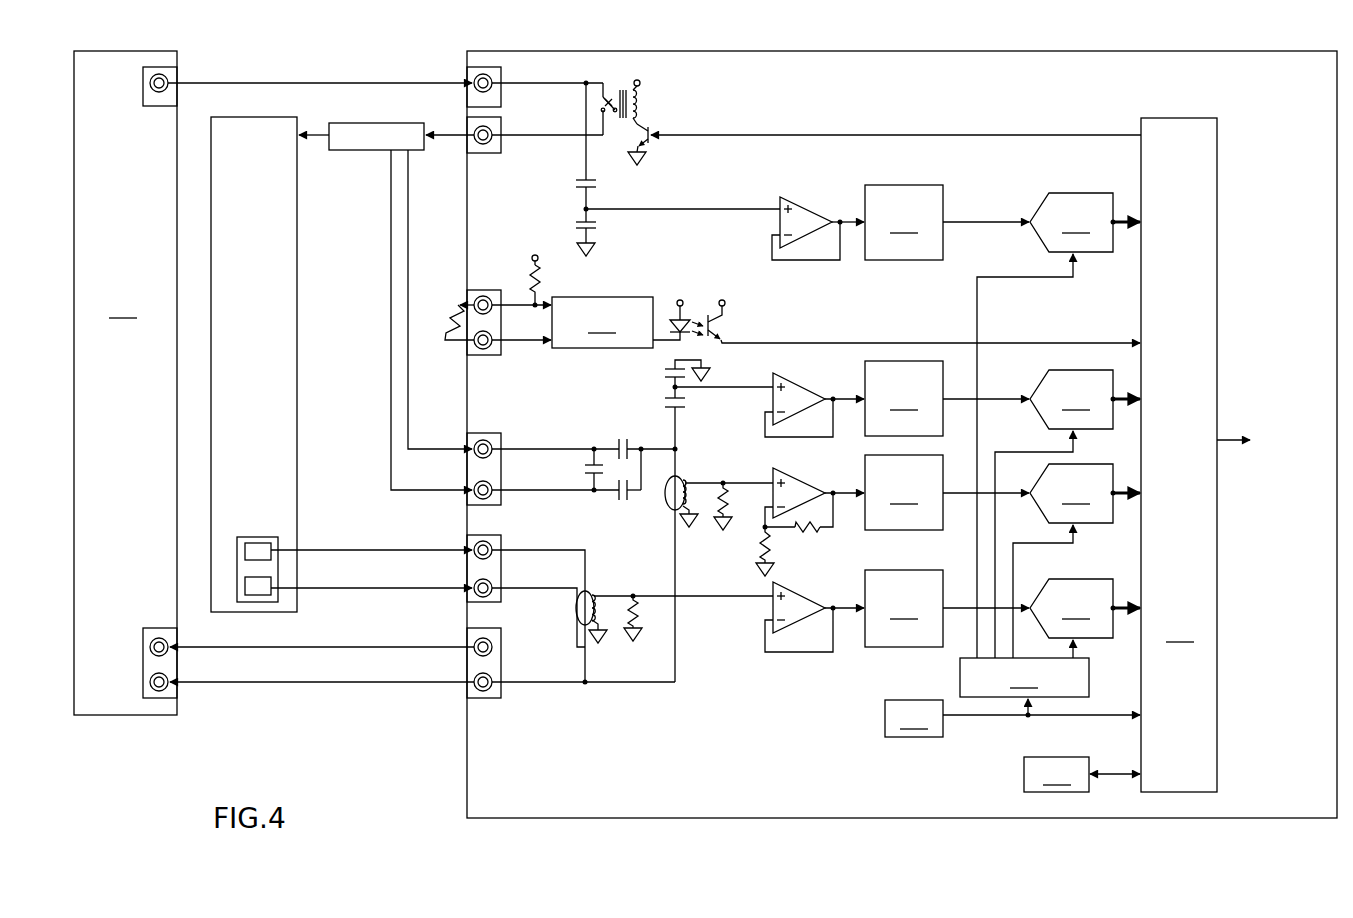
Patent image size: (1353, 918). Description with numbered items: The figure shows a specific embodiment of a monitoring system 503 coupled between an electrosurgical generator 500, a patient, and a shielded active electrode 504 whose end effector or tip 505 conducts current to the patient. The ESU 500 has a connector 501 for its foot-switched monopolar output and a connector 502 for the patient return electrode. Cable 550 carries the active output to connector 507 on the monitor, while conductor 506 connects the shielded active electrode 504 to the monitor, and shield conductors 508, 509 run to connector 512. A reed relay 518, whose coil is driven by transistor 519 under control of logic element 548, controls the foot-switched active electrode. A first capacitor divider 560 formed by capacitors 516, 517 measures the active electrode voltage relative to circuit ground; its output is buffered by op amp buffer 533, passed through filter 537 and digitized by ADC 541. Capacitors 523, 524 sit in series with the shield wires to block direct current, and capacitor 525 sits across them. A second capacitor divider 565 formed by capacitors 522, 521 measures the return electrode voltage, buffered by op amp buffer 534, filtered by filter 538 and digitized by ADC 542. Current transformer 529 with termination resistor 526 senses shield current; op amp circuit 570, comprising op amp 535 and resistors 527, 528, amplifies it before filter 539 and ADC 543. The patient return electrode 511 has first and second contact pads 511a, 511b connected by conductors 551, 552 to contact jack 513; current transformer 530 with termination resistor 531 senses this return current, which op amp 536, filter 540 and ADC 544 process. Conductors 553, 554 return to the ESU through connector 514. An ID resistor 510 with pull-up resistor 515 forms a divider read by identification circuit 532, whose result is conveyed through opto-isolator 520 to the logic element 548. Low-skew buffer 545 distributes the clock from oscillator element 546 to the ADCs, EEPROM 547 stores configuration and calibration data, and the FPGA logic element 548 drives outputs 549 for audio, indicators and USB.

The electrosurgical generator 500 is at (125, 383).
The connector 501 is at (141, 86).
The connector 502 is at (143, 635).
The monitoring system 503 is at (790, 49).
The shielded active electrode 504 is at (350, 122).
The active electrode end effector or tip 505 is at (322, 140).
The conductor 506 is at (437, 133).
The connector 507 is at (483, 66).
The shield conductor 508 is at (409, 233).
The shield conductor 509 is at (391, 238).
The identification resistor 510 is at (455, 305).
The patient return electrode 511 is at (245, 537).
The first patient contact pad 511a is at (265, 549).
The second patient contact pad 511b is at (265, 590).
The connector 512 is at (470, 506).
The contact jack 513 is at (505, 605).
The connector 514 is at (488, 700).
The pull-up resistor 515 is at (541, 273).
The first capacitor 516 is at (597, 182).
The second capacitor 517 is at (597, 225).
The reed relay 518 is at (642, 97).
The transistor 519 is at (650, 143).
The opto-isolator 520 is at (727, 327).
The capacitor 521 is at (662, 371).
The capacitor 522 is at (662, 400).
The capacitor 523 is at (617, 440).
The capacitor 524 is at (622, 503).
The capacitor 525 is at (582, 473).
The termination resistor 526 is at (729, 500).
The resistor 527 is at (772, 553).
The resistor 528 is at (806, 535).
The current transformer 529 is at (688, 480).
The current transformer 530 is at (590, 592).
The termination resistor 531 is at (640, 605).
The identification circuit 532 is at (572, 322).
The op amp buffer 533 is at (795, 201).
The op amp buffer 534 is at (788, 378).
The op amp 535 is at (788, 473).
The op amp 536 is at (810, 605).
The filter 537 is at (947, 222).
The filter 538 is at (947, 398).
The filter 539 is at (947, 492).
The filter 540 is at (947, 608).
The analog digital converter 541 is at (1058, 425).
The analog digital converter 542 is at (1067, 514).
The analog digital converter 543 is at (1076, 561).
The analog digital converter 544 is at (1085, 618).
The low-skew buffer 545 is at (1024, 677).
The oscillator element 546 is at (1012, 718).
The EEPROM 547 is at (1082, 774).
The logic element 548 is at (1179, 455).
The outputs 549 is at (1220, 438).
The cable 550 is at (260, 80).
The conductor 551 is at (373, 550).
The conductor 552 is at (373, 588).
The conductor 553 is at (378, 647).
The conductor 554 is at (378, 682).
The first capacitor divider 560 is at (560, 165).
The second capacitor divider 565 is at (590, 398).
The op amp circuit 570 is at (752, 458).